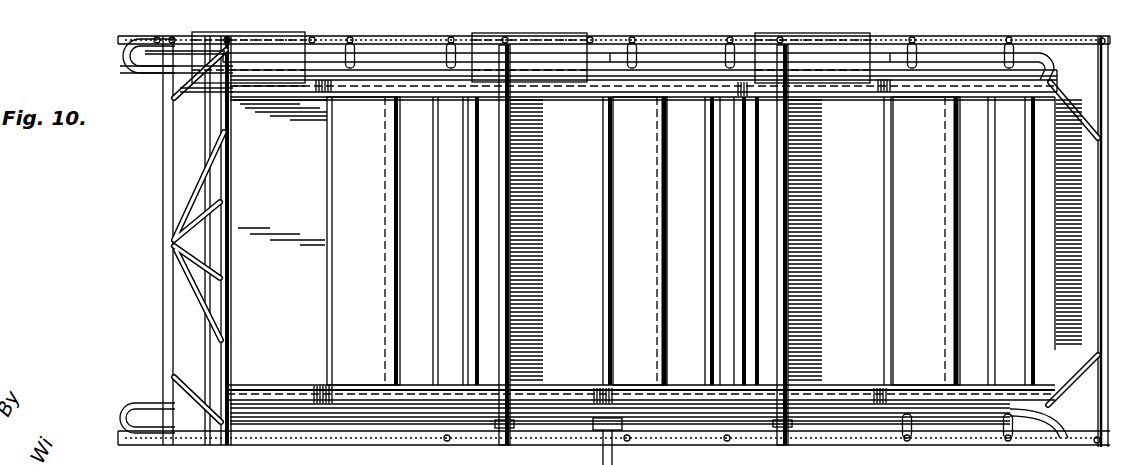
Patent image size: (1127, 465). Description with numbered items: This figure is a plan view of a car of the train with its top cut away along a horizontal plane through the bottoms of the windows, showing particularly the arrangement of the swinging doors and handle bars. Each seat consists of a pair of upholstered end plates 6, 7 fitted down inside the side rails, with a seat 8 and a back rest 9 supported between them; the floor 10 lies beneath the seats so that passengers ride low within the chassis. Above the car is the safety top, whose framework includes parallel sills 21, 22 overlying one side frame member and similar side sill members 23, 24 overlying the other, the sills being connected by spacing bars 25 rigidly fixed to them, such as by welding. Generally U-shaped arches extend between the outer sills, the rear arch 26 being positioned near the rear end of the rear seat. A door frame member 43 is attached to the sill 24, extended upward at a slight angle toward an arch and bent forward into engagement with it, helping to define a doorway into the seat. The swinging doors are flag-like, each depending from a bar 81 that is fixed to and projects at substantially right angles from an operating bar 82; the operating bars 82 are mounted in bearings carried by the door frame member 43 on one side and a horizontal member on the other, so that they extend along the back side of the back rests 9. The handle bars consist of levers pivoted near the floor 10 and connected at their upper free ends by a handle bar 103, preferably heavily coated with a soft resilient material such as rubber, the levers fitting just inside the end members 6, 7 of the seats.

The end plate 6 is at (337, 81).
The end plate 7 is at (323, 388).
The seat 8 is at (365, 262).
The back rest 9 is at (492, 268).
The floor 10 is at (278, 196).
The sill 21 is at (290, 438).
The sill 22 is at (263, 408).
The side sill member 23 is at (393, 70).
The side sill member 24 is at (354, 47).
The spacing bar 25 is at (362, 60).
The arch 26 is at (969, 437).
The door frame member 43 is at (503, 46).
The bar 81 is at (572, 441).
The operating bar 82 is at (511, 152).
The handle bar 103 is at (943, 224).